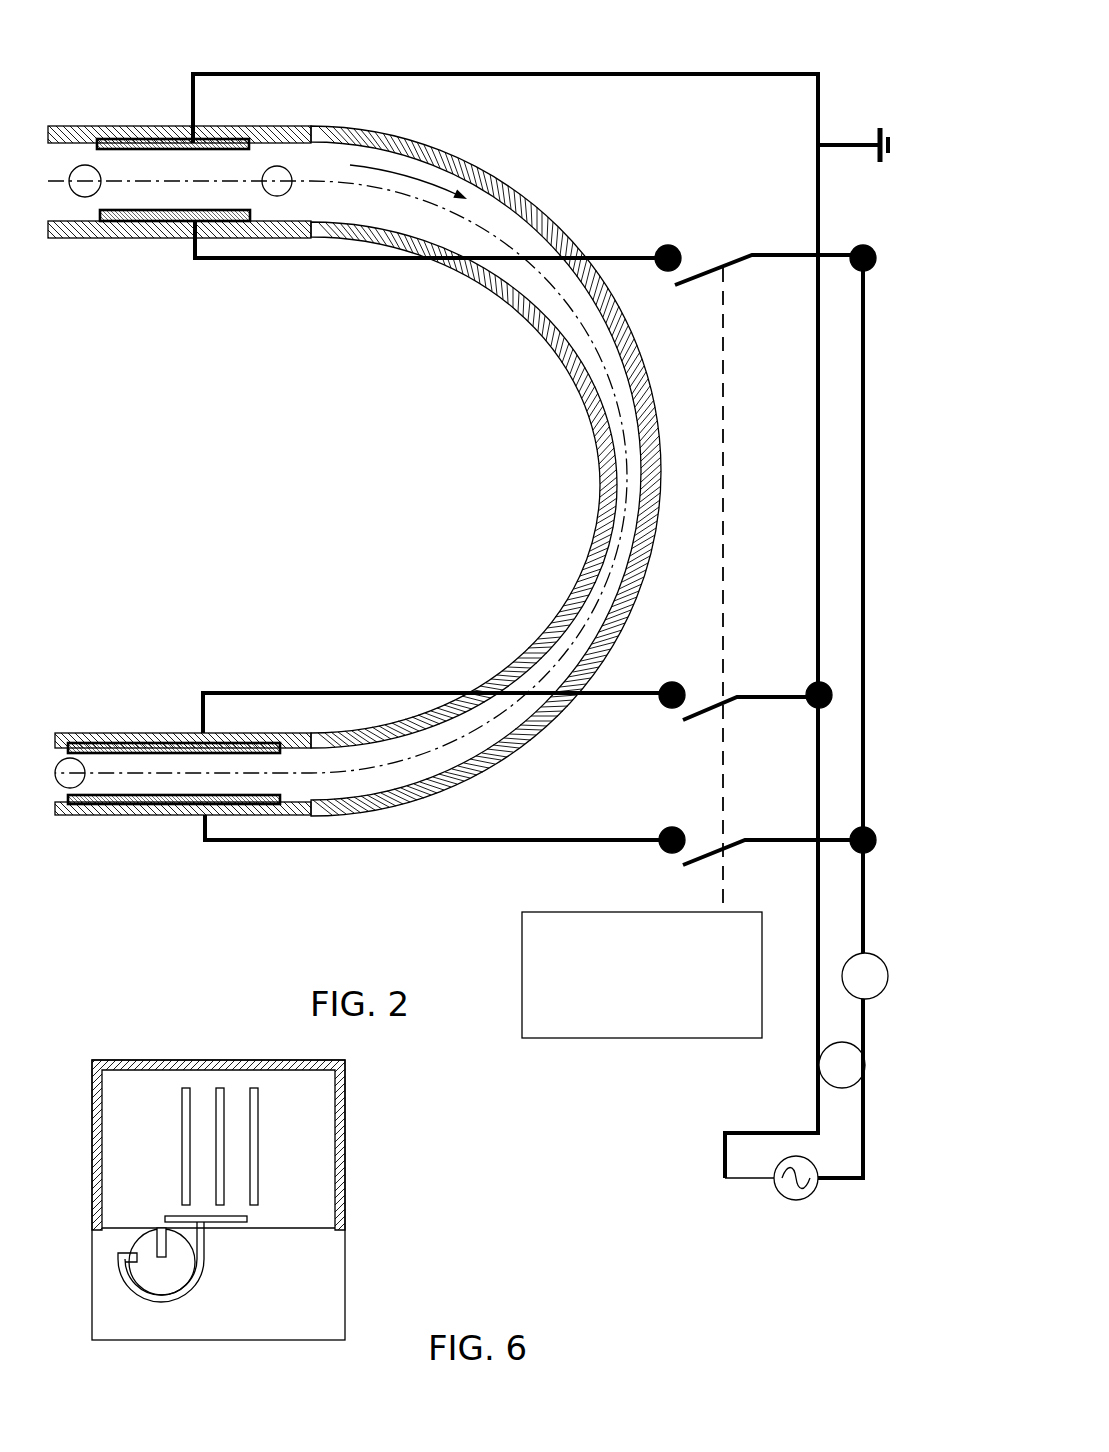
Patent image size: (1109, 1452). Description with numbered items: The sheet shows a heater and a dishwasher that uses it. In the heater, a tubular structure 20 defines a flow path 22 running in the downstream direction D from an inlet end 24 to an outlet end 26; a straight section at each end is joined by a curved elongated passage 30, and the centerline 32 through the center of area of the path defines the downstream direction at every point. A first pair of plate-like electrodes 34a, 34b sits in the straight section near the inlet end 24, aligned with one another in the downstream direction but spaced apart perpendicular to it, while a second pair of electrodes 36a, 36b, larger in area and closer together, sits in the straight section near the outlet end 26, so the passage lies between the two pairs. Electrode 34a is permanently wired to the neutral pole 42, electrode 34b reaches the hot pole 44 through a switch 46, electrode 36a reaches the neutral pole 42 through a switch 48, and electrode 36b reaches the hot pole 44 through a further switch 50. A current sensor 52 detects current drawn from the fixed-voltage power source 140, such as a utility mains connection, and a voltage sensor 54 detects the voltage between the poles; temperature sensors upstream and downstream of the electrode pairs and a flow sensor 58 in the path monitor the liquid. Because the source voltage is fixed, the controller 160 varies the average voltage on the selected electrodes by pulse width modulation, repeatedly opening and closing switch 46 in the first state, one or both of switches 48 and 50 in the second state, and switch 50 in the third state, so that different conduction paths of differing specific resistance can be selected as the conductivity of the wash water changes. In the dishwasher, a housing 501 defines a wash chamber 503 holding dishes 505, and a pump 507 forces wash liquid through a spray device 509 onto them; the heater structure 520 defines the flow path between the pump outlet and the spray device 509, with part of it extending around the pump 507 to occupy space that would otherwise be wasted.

In FIG. 2, the structure 20 is at (468, 143).
In FIG. 2, the flow path 22 is at (320, 157).
In FIG. 2, the inlet end 24 is at (50, 127).
In FIG. 2, the outlet end 26 is at (60, 732).
In FIG. 2, the elongated passage 30 is at (590, 362).
In FIG. 2, the centerline 32 is at (577, 325).
In FIG. 2, the first electrode 34a is at (152, 137).
In FIG. 2, the first electrode 34b is at (182, 238).
In FIG. 2, the second electrode 36a is at (178, 738).
In FIG. 2, the second electrode 36b is at (158, 808).
In FIG. 2, the downstream direction D is at (405, 174).
In FIG. 2, the first pole 42 is at (815, 1039).
In FIG. 2, the second pole 44 is at (869, 1100).
In FIG. 2, the switch 46 is at (733, 258).
In FIG. 2, the switch 48 is at (737, 697).
In FIG. 2, the switch 50 is at (745, 840).
In FIG. 2, the current sensor 52 is at (873, 961).
In FIG. 2, the voltage sensor 54 is at (856, 1078).
In FIG. 2, the flow sensor 58 is at (282, 197).
In FIG. 2, the power source 140 is at (749, 1178).
In FIG. 2, the controller 160 is at (549, 1020).
In FIG. 6, the housing 501 is at (218, 1066).
In FIG. 6, the wash chamber 503 is at (147, 1148).
In FIG. 6, the dishes 505 is at (180, 1127).
In FIG. 6, the pump 507 is at (143, 1252).
In FIG. 6, the spray device 509 is at (200, 1218).
In FIG. 6, the heater structure 520 is at (142, 1298).